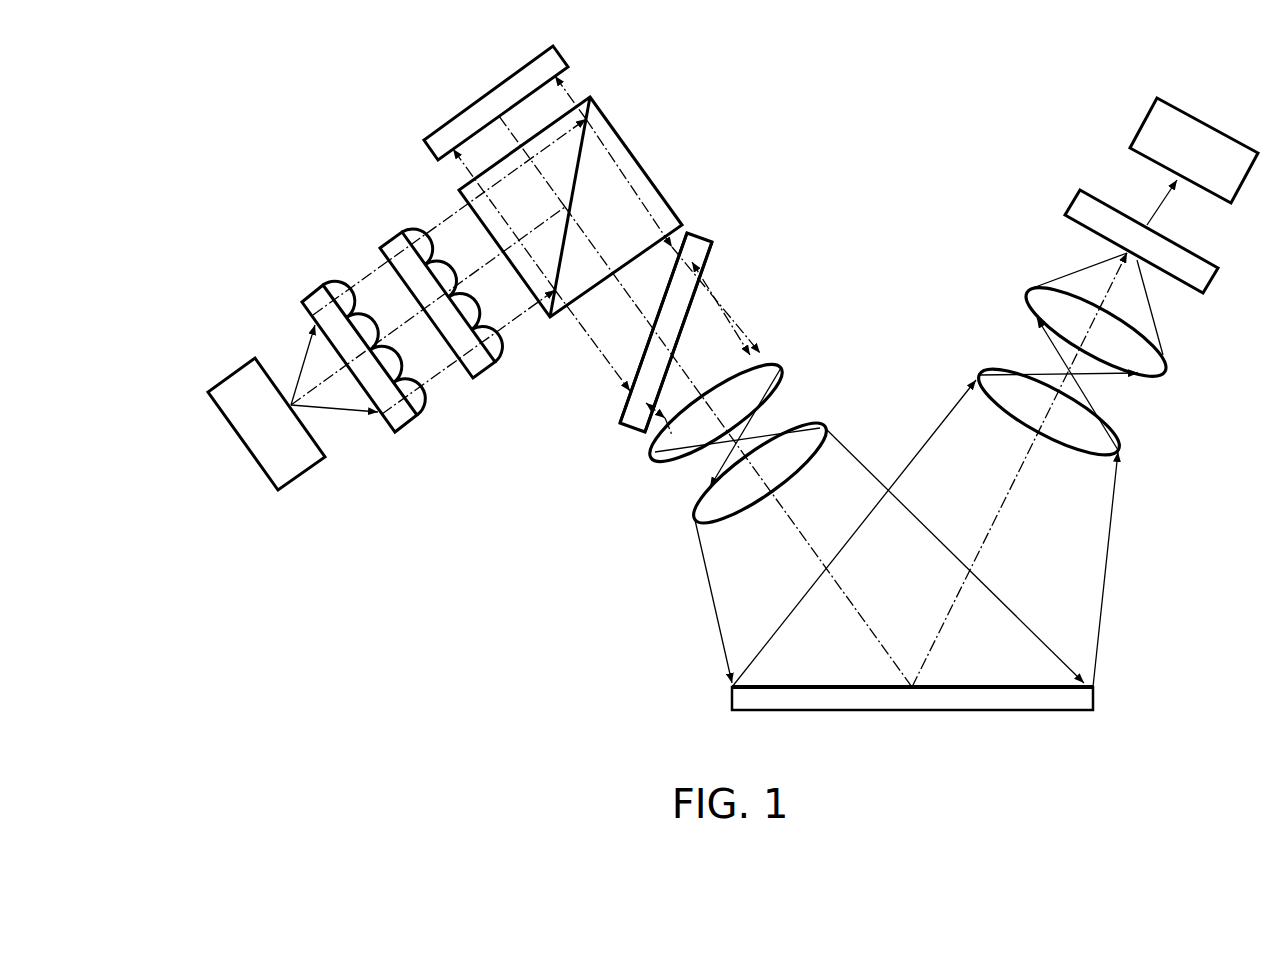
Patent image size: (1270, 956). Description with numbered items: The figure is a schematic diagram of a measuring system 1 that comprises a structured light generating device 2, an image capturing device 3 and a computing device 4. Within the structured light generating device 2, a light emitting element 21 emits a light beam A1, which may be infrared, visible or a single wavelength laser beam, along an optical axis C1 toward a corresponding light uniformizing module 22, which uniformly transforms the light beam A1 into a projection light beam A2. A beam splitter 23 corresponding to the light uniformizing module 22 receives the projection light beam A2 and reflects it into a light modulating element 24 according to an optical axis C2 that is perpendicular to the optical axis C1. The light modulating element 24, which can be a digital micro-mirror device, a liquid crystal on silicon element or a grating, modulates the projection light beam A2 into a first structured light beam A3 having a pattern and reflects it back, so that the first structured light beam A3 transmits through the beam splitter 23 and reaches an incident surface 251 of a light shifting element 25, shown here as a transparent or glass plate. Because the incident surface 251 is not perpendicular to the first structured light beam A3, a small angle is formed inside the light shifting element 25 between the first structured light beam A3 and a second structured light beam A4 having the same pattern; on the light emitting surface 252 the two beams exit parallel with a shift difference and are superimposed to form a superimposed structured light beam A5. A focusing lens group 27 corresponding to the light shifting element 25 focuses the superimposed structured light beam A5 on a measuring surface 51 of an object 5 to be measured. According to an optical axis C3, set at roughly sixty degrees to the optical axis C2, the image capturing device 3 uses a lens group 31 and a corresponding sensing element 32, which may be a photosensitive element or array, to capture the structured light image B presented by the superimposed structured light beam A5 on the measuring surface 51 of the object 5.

The measuring system 1 is at (878, 115).
The structured light generating device 2 is at (377, 147).
The light emitting element 21 is at (246, 448).
The light uniformizing module 22 is at (330, 280).
The beam splitter 23 is at (578, 176).
The light modulating element 24 is at (485, 92).
The light shifting element 25 is at (693, 232).
The incident surface 251 is at (664, 297).
The light emitting surface 252 is at (686, 313).
The focusing lens group 27 is at (697, 508).
The image capturing device 3 is at (987, 265).
The lens group 31 is at (1030, 300).
The sensing element 32 is at (1077, 203).
The computing device 4 is at (1143, 125).
The object to be measured 5 is at (1095, 687).
The measuring surface 51 is at (952, 685).
The light beam A1 is at (300, 366).
The projection light beam A2 is at (562, 93).
The first structured light beam A3 is at (633, 192).
The second structured light beam A4 is at (688, 258).
The superimposed structured light beam A5 is at (745, 425).
The structured light image B is at (920, 452).
The optical axis C1 is at (328, 384).
The optical axis C2 is at (632, 293).
The optical axis C3 is at (1005, 503).